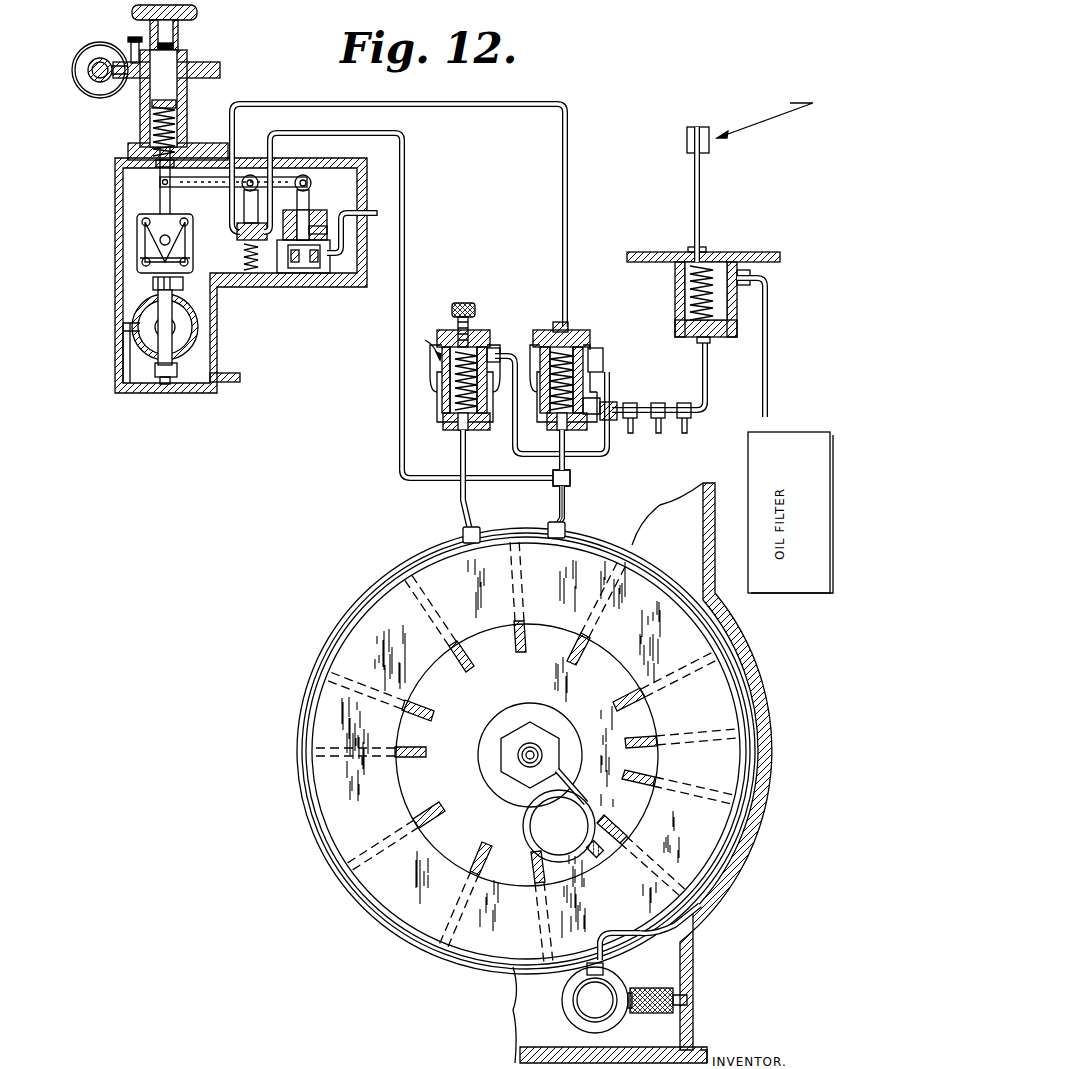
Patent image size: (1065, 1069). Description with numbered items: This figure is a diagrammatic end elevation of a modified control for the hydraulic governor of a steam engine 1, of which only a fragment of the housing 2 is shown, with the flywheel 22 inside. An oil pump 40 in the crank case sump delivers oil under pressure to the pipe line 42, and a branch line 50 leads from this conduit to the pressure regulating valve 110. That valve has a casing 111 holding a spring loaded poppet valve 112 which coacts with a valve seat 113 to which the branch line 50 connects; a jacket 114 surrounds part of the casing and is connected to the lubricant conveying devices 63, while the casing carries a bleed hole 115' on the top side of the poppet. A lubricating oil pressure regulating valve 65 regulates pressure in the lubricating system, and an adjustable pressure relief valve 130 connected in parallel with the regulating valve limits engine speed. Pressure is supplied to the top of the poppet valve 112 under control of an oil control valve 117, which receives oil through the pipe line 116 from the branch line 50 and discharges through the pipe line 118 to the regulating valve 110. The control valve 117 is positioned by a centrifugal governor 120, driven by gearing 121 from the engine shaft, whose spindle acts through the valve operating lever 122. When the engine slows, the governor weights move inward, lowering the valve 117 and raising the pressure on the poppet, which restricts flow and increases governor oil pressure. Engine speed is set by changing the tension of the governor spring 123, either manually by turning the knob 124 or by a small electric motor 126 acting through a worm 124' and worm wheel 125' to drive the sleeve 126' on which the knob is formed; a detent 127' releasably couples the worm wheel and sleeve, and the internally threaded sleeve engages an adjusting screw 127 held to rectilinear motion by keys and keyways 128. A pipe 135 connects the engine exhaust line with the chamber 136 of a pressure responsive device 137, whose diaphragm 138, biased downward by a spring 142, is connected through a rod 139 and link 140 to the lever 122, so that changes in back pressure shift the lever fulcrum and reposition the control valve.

The steam engine 1 is at (763, 690).
The housing 2 is at (742, 862).
The flywheel disc 22 is at (492, 692).
The oil pump 40 is at (575, 1000).
The pipe line 42 is at (385, 580).
The branch line 50 is at (567, 506).
The lubricant conveying devices 63 is at (660, 434).
The lubricating oil pressure regulating valve 65 is at (727, 287).
The pressure regulating valve 110 is at (537, 332).
The casing 111 is at (541, 362).
The poppet valve 112 is at (605, 402).
The valve seat 113 is at (555, 424).
The jacket 114 is at (607, 367).
The bleed hole 115' is at (539, 302).
The pipe line 116 is at (405, 480).
The oil control valve 117 is at (241, 245).
The pipe line 118 is at (505, 104).
The centrifugal governor 120 is at (140, 240).
The gearing 121 is at (130, 330).
The valve operating lever 122 is at (200, 180).
The spring 123 is at (152, 125).
The knob 124 is at (186, 13).
The worm 124' is at (85, 89).
The worm wheel 125' is at (193, 63).
The electric motor 126 is at (85, 61).
The sleeve 126' is at (202, 36).
The adjusting screw 127 is at (197, 60).
The detent 127' is at (117, 34).
The keys and keyways 128 is at (190, 105).
The adjustable pressure relief valve 130 is at (440, 410).
The pipe 135 is at (380, 215).
The chamber 136 is at (318, 256).
The pressure responsive device 137 is at (327, 220).
The diaphragm 138 is at (293, 252).
The rod 139 is at (308, 210).
The link 140 is at (310, 185).
The spring 142 is at (328, 236).